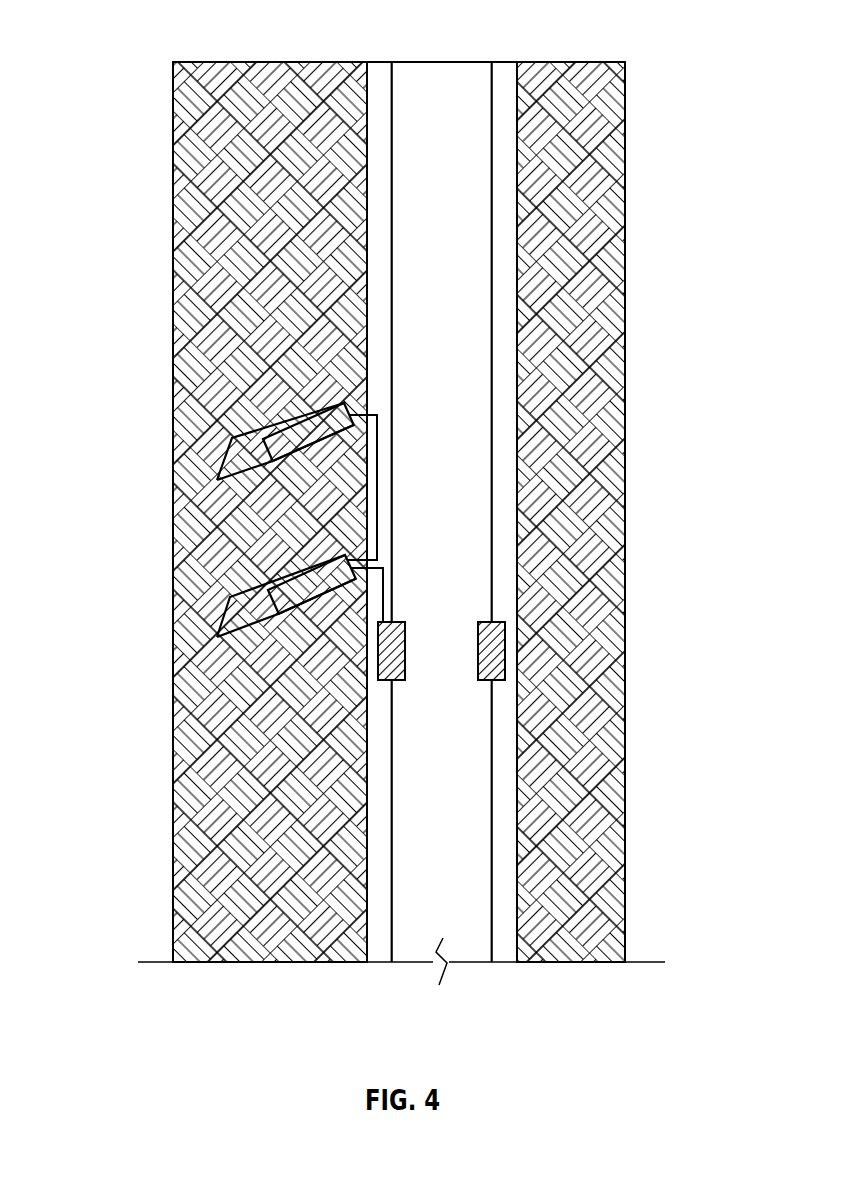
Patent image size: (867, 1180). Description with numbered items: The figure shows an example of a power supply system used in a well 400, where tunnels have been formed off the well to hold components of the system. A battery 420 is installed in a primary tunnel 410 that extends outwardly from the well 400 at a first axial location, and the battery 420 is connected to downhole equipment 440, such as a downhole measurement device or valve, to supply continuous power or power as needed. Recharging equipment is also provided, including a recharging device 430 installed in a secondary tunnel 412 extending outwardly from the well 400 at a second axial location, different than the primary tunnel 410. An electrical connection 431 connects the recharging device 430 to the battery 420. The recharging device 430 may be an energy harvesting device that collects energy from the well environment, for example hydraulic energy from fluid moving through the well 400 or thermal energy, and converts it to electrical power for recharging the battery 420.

The well 400 is at (455, 43).
The primary tunnel 410 is at (228, 607).
The secondary tunnel 412 is at (231, 451).
The battery 420 is at (292, 594).
The recharging device 430 is at (313, 427).
The electrical connection 431 is at (377, 520).
The downhole equipment 440 is at (388, 653).